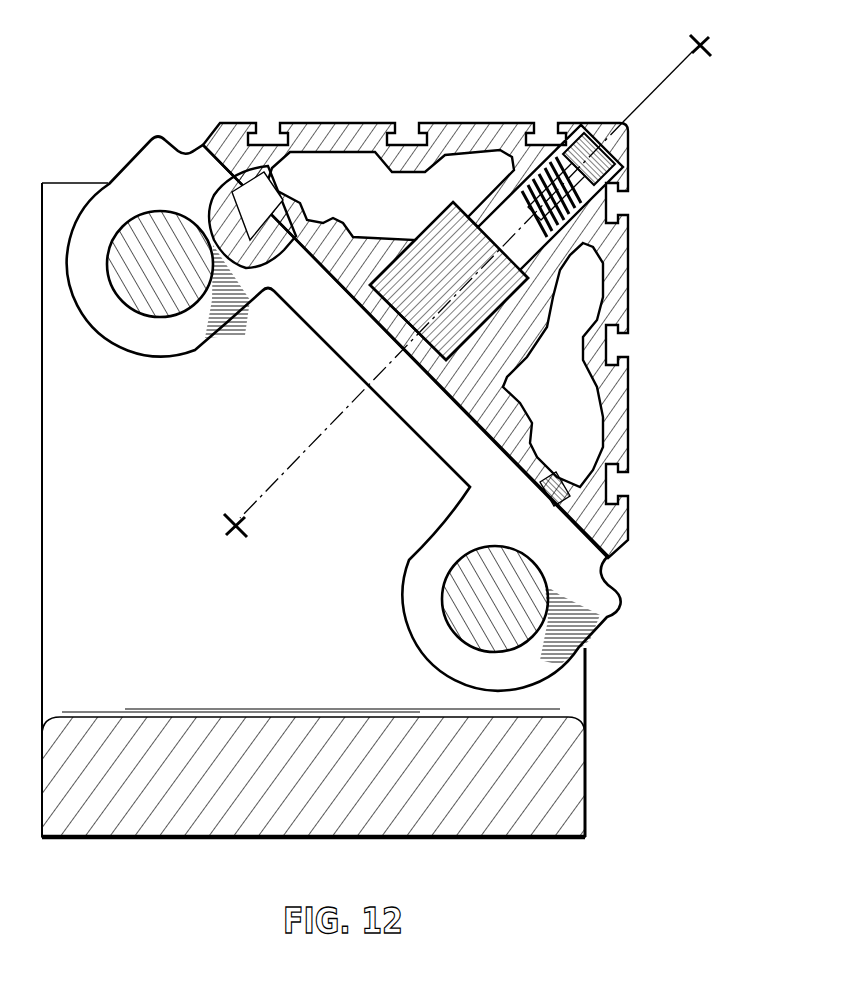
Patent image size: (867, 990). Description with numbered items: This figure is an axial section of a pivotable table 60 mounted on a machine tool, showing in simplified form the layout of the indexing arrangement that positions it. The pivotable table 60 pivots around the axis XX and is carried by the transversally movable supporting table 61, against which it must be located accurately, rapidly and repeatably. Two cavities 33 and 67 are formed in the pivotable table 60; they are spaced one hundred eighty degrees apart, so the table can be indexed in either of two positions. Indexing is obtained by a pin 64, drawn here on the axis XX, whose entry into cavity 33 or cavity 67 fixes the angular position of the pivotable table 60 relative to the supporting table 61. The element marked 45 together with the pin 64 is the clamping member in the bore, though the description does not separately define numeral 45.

The pivotable table 60 is at (373, 139).
The transversally movable supporting table 61 is at (598, 607).
The cavity 33 is at (272, 200).
The clamp cylinder 45 is at (434, 249).
The pin 64 is at (268, 290).
The cavity 67 is at (558, 497).